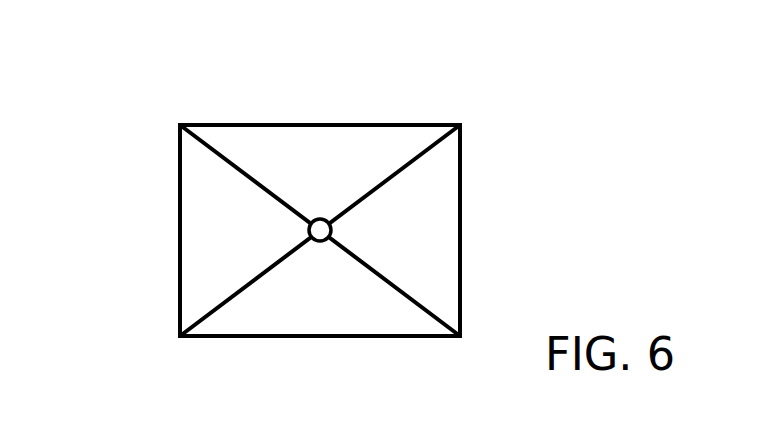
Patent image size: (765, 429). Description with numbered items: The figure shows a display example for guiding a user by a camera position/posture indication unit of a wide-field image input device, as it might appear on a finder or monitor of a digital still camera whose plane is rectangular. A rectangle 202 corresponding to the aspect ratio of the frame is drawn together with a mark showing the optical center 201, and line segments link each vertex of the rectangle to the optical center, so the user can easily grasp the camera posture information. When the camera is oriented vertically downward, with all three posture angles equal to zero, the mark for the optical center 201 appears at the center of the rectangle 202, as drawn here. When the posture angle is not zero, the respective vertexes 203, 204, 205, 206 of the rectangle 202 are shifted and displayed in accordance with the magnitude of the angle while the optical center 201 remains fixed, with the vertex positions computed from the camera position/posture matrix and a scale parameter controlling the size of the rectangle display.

The optical center 201 is at (318, 222).
The rectangle 202 is at (310, 125).
The vertex 203 is at (460, 125).
The vertex 204 is at (460, 336).
The vertex 205 is at (180, 125).
The vertex 206 is at (180, 336).